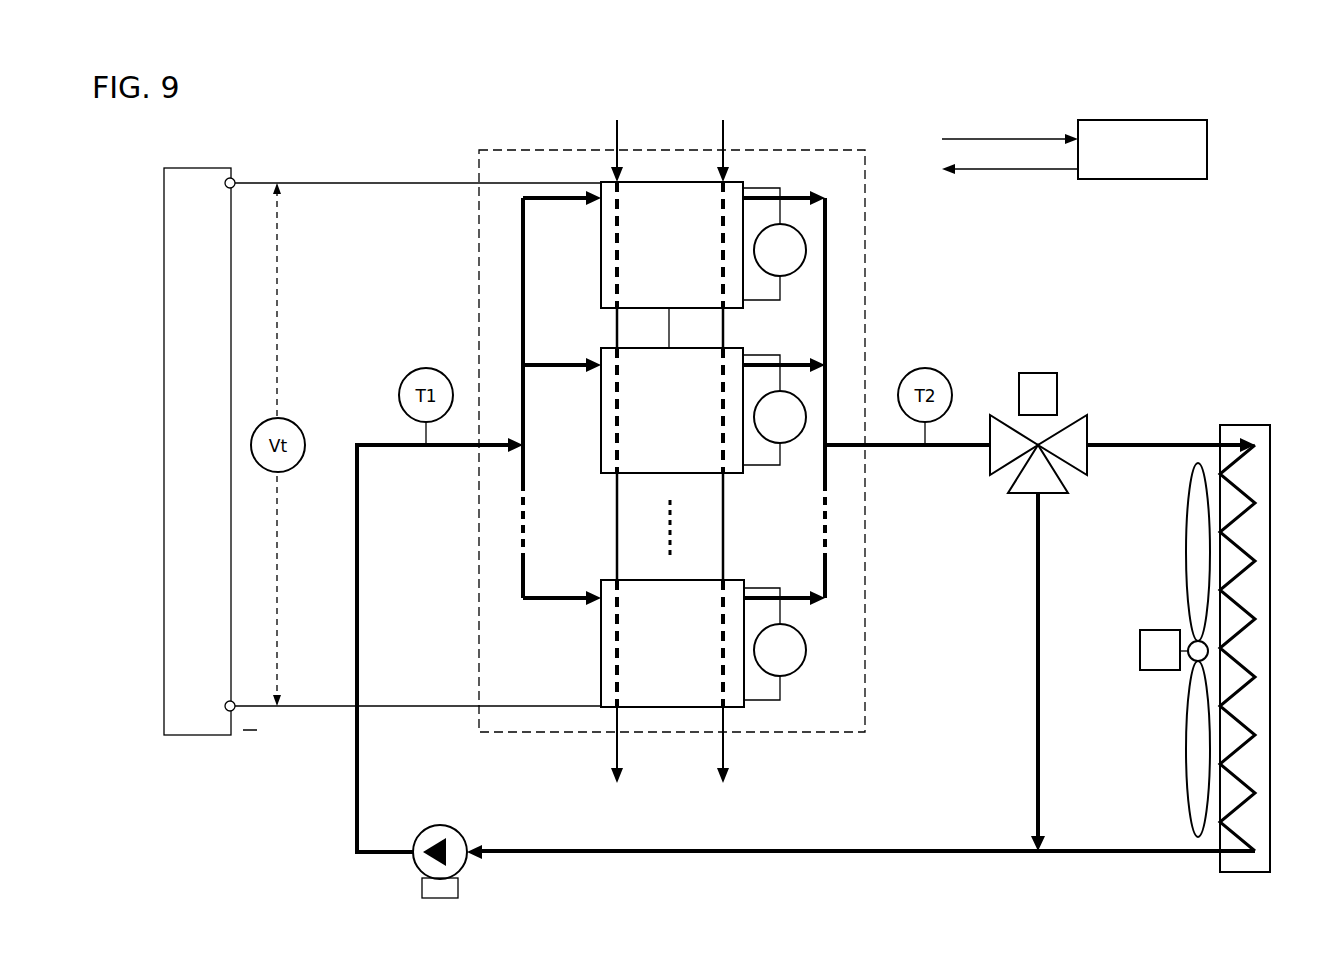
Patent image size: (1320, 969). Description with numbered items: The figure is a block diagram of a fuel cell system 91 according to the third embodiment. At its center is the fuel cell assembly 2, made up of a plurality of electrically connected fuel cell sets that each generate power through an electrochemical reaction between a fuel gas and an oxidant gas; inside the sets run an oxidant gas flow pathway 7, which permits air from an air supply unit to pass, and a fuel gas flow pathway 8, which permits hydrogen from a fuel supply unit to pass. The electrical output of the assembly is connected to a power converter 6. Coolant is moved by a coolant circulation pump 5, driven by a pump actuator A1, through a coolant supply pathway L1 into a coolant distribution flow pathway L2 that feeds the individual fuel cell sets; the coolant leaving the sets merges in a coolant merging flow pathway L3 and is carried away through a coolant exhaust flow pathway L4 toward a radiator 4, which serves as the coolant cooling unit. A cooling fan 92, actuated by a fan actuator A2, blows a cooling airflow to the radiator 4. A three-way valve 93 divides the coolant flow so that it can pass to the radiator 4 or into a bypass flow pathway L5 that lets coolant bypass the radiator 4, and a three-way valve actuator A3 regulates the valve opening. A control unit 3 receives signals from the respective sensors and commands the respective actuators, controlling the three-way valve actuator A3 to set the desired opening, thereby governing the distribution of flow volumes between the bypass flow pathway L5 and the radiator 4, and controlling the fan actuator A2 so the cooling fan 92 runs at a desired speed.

The fuel cell assembly 2 is at (865, 258).
The control unit 3 is at (1138, 180).
The radiator 4 is at (1242, 425).
The coolant circulation pump 5 is at (446, 826).
The power converter 6 is at (164, 573).
The oxidant gas flow pathway 7 is at (723, 528).
The fuel gas flow pathway 8 is at (617, 525).
The fuel cell system 91 is at (1229, 231).
The cooling fan 92 is at (1190, 805).
The three-way valve 93 is at (1013, 492).
The pump actuator A1 is at (458, 888).
The fan actuator A2 is at (1156, 630).
The three-way valve actuator A3 is at (1046, 373).
The coolant supply pathway L1 is at (360, 640).
The coolant distribution flow pathway L2 is at (523, 286).
The coolant merging flow pathway L3 is at (865, 324).
The coolant exhaust flow pathway L4 is at (1162, 445).
The bypass flow pathway L5 is at (1040, 723).